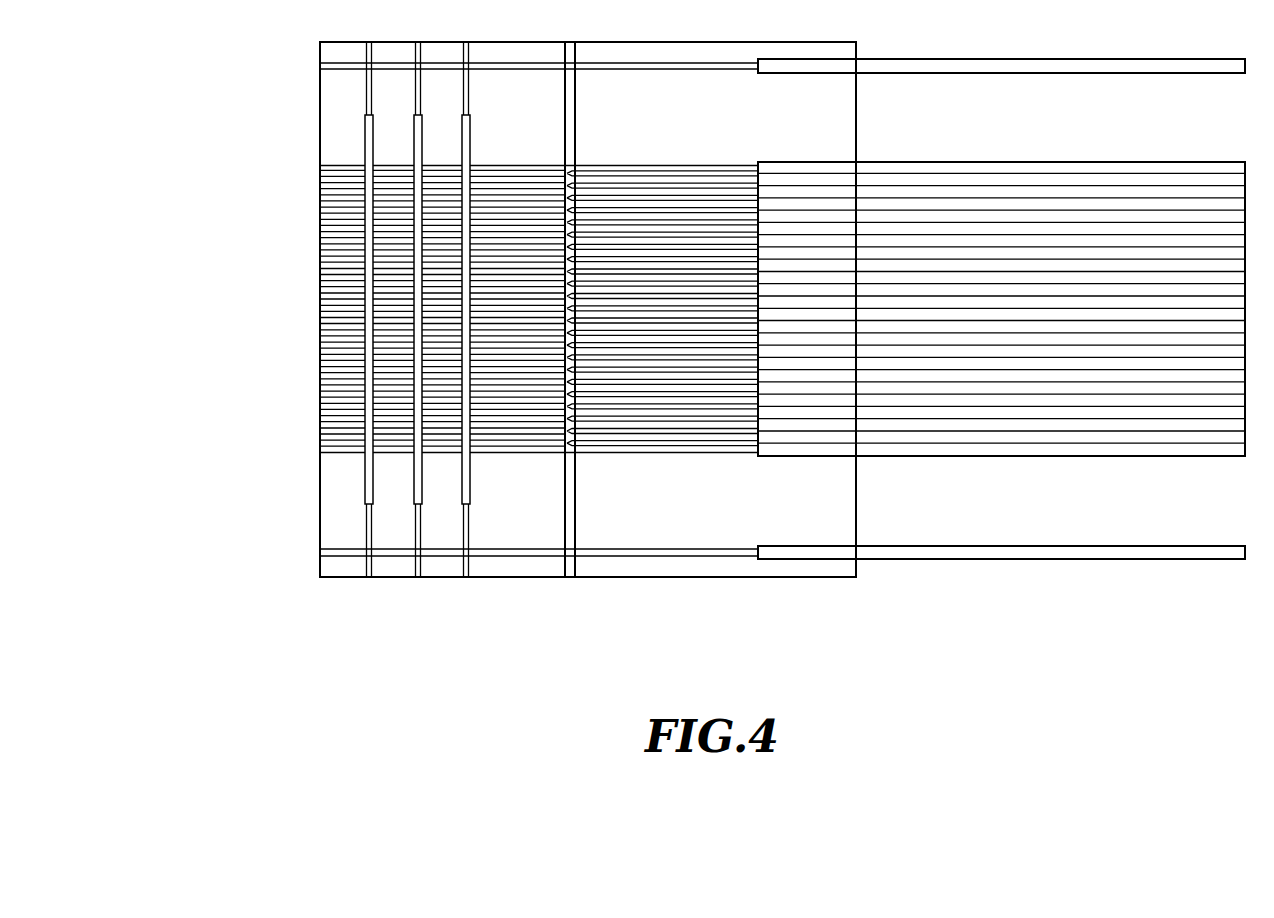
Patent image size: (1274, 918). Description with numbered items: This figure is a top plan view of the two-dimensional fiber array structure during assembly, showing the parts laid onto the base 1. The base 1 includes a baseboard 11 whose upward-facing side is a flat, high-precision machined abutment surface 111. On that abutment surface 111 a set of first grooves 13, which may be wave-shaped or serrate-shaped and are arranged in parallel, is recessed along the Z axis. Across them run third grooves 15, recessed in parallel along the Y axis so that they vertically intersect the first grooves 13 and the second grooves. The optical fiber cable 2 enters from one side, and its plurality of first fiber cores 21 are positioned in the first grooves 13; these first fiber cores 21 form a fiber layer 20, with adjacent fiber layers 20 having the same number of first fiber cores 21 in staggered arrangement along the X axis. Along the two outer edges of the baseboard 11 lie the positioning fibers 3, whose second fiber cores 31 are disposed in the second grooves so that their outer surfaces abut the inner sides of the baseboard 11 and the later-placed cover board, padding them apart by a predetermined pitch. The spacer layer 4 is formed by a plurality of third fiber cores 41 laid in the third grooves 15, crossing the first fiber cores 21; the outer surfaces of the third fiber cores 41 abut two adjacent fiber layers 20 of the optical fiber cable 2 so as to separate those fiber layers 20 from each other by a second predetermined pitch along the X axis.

The base 1 is at (606, 582).
The baseboard 11 is at (367, 650).
The abutment surface 111 is at (399, 564).
The first groove 13 is at (340, 456).
The third groove 15 is at (466, 564).
The optical fiber cable 2 is at (240, 118).
The fiber layer 20 is at (319, 215).
The first fiber core 21 is at (343, 169).
The positioning fiber 3 is at (237, 38).
The second fiber core 31 is at (343, 65).
The spacer layer 4 is at (237, 352).
The third fiber core 41 is at (372, 298).